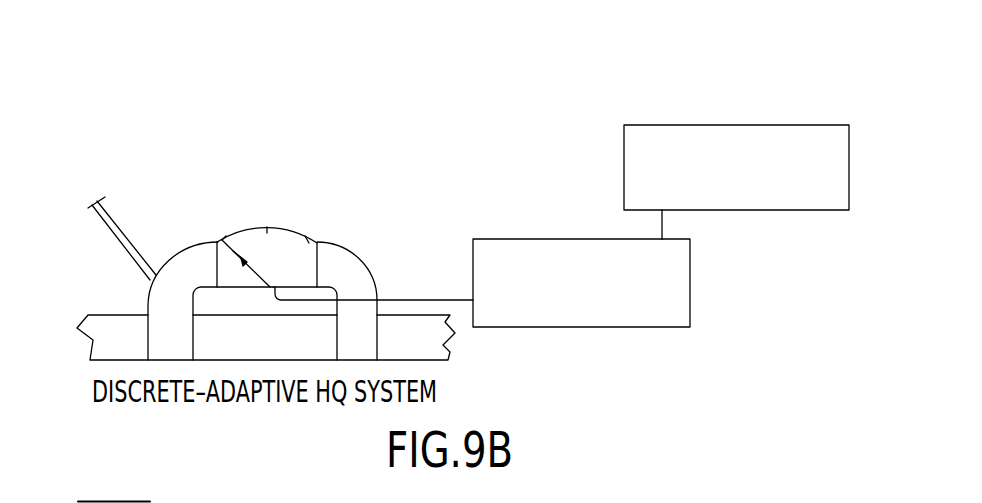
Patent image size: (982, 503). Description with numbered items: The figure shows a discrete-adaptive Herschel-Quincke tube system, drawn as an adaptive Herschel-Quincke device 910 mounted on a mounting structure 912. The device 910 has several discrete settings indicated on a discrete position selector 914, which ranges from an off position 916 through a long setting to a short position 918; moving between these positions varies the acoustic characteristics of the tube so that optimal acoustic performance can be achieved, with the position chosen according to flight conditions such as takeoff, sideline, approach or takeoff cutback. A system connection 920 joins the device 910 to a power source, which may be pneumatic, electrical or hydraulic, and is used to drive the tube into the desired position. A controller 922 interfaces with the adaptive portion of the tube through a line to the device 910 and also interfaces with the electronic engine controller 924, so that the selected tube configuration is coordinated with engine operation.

The adaptive Herschel-Quincke device 910 is at (362, 258).
The mounting structure 912 is at (445, 349).
The discrete position selector 914 is at (275, 158).
The off position 916 is at (243, 232).
The short position 918 is at (300, 234).
The system connection 920 is at (90, 197).
The controller 922 is at (690, 297).
The electronic engine controller 924 is at (733, 125).